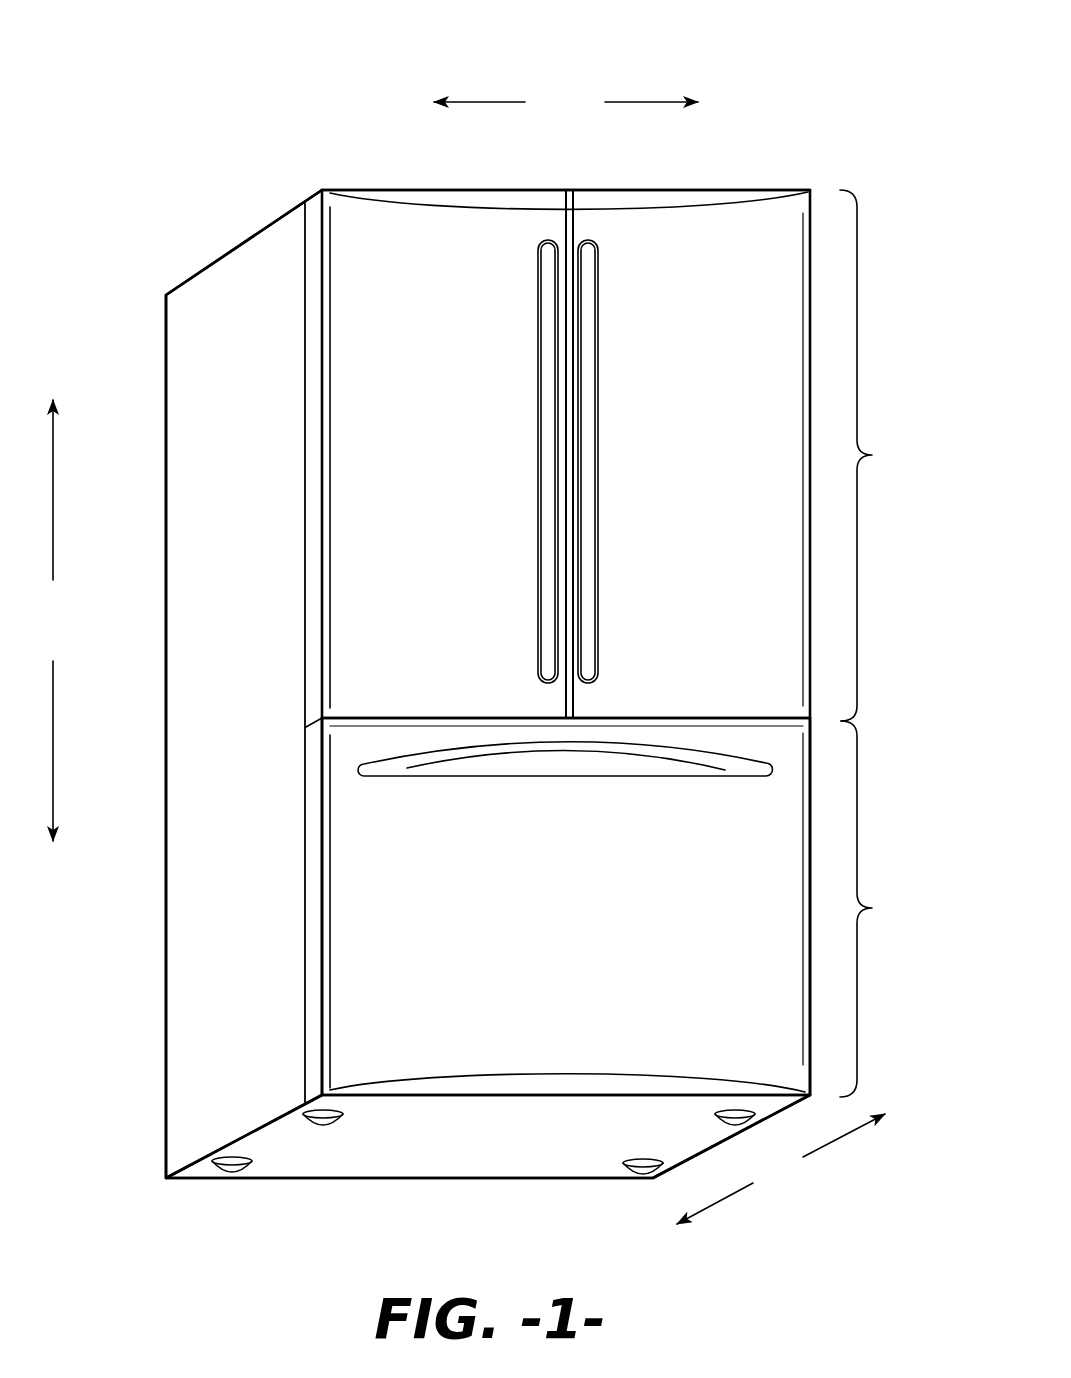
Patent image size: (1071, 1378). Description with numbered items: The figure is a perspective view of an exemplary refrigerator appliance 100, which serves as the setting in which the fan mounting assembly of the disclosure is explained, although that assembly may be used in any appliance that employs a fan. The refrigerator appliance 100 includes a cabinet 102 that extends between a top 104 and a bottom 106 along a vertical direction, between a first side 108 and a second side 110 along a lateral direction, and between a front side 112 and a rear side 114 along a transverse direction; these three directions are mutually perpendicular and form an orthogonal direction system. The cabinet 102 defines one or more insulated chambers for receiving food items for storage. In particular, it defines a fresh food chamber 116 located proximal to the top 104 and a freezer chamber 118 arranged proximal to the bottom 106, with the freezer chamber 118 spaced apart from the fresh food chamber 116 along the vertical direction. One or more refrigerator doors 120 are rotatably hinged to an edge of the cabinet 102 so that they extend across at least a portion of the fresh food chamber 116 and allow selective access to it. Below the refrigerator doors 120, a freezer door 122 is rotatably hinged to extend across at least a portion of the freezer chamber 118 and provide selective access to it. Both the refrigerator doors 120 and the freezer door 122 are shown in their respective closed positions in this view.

The refrigerator appliance 100 is at (489, 630).
The cabinet 102 is at (192, 350).
The top 104 is at (367, 186).
The bottom 106 is at (344, 1187).
The first side 108 is at (268, 1007).
The second side 110 is at (824, 622).
The front side 112 is at (581, 1042).
The rear side 114 is at (164, 730).
The fresh food chamber 116 is at (886, 455).
The freezer chamber 118 is at (886, 909).
The refrigerator doors 120 is at (665, 240).
The freezer door 122 is at (475, 1053).